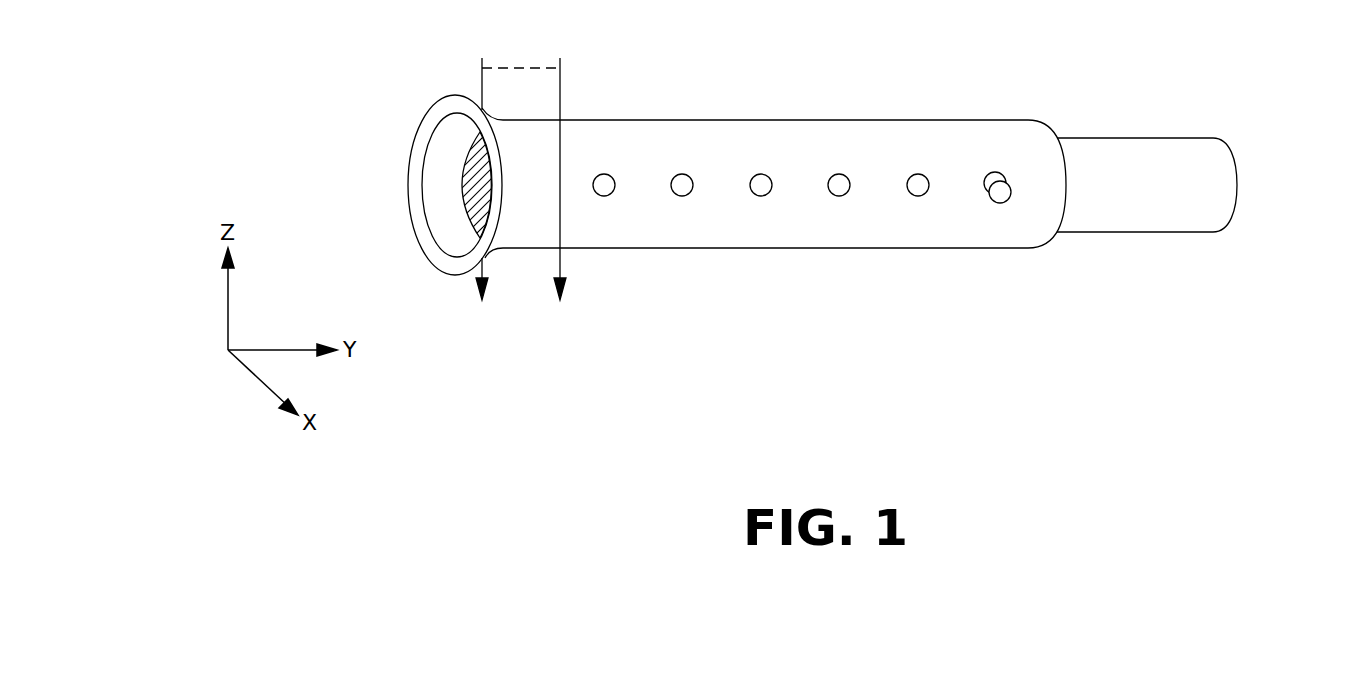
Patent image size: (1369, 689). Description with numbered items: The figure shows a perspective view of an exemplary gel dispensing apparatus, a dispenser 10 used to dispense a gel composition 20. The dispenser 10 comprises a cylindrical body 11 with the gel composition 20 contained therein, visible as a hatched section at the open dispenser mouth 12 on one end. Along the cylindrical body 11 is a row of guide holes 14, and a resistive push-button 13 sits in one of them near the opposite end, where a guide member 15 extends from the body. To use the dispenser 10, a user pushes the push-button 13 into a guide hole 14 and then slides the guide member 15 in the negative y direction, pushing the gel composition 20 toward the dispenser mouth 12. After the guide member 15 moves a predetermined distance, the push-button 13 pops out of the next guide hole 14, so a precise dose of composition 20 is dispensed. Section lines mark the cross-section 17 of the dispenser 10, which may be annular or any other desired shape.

The dispenser 10 is at (834, 208).
The cylindrical body 11 is at (843, 120).
The dispenser mouth 12 is at (440, 158).
The resistive push-button 13 is at (1003, 194).
The guide hole 14 is at (914, 174).
The guide member 15 is at (1212, 178).
The cross-section 17 is at (521, 198).
The gel composition 20 is at (470, 190).